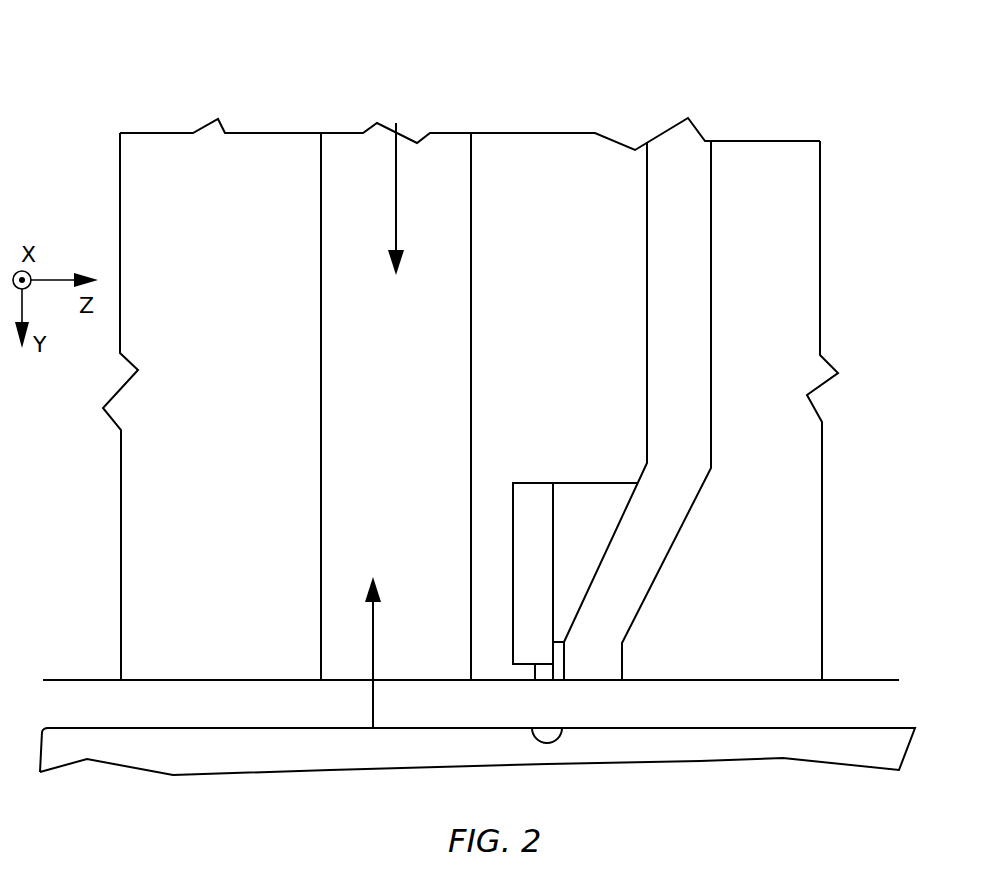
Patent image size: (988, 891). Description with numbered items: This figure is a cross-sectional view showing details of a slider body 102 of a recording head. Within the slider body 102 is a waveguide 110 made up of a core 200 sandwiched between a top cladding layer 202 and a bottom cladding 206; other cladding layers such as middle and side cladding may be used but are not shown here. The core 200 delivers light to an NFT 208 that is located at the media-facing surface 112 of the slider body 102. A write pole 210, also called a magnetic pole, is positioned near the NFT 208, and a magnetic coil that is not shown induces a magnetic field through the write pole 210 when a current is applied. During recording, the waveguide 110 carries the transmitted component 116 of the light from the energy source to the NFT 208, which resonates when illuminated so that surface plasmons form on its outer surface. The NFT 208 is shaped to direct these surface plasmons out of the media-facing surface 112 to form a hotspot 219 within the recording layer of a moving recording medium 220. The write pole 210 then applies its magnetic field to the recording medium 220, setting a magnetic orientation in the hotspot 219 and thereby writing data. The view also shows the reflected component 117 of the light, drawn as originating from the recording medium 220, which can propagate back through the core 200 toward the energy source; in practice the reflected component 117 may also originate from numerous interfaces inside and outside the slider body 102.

The slider body 102 is at (108, 65).
The waveguide 110 is at (642, 67).
The bottom cladding 206 is at (196, 143).
The core 200 is at (345, 142).
The top cladding layer 202 is at (583, 142).
The NFT 208 is at (540, 450).
The write pole 210 is at (623, 663).
The transmitted component 116 is at (396, 185).
The reflected component 117 is at (372, 632).
The media-facing surface 112 is at (857, 681).
The recording medium 220 is at (230, 772).
The hotspot 219 is at (545, 741).